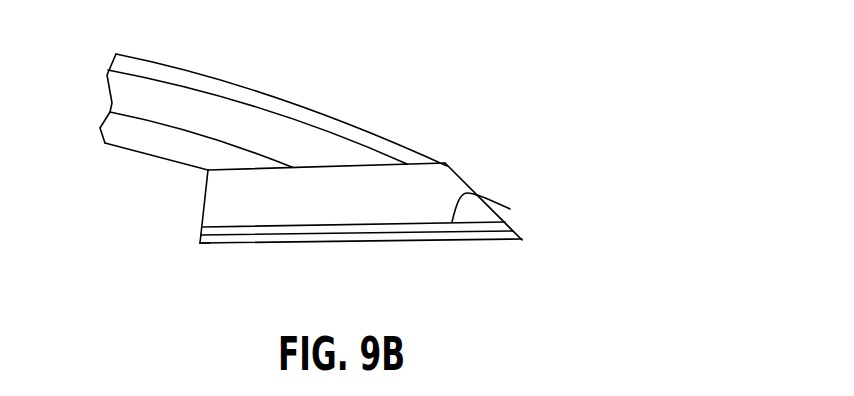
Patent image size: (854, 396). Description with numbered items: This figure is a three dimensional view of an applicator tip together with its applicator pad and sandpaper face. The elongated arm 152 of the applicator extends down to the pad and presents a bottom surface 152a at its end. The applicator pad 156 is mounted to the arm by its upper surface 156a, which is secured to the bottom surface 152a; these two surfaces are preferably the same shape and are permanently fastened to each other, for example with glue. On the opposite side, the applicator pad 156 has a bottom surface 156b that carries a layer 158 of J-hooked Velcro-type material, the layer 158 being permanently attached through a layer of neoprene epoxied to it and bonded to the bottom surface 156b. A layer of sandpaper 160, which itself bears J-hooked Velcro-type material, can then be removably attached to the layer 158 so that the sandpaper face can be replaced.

The elongated arm 152 is at (193, 107).
The bottom surface 152a is at (342, 165).
The applicator pad 156 is at (497, 153).
The upper surface 156a is at (252, 171).
The bottom surface 156b is at (510, 209).
The layer of J-hooked Velcro-type material 158 is at (468, 228).
The layer of sandpaper 160 is at (208, 244).